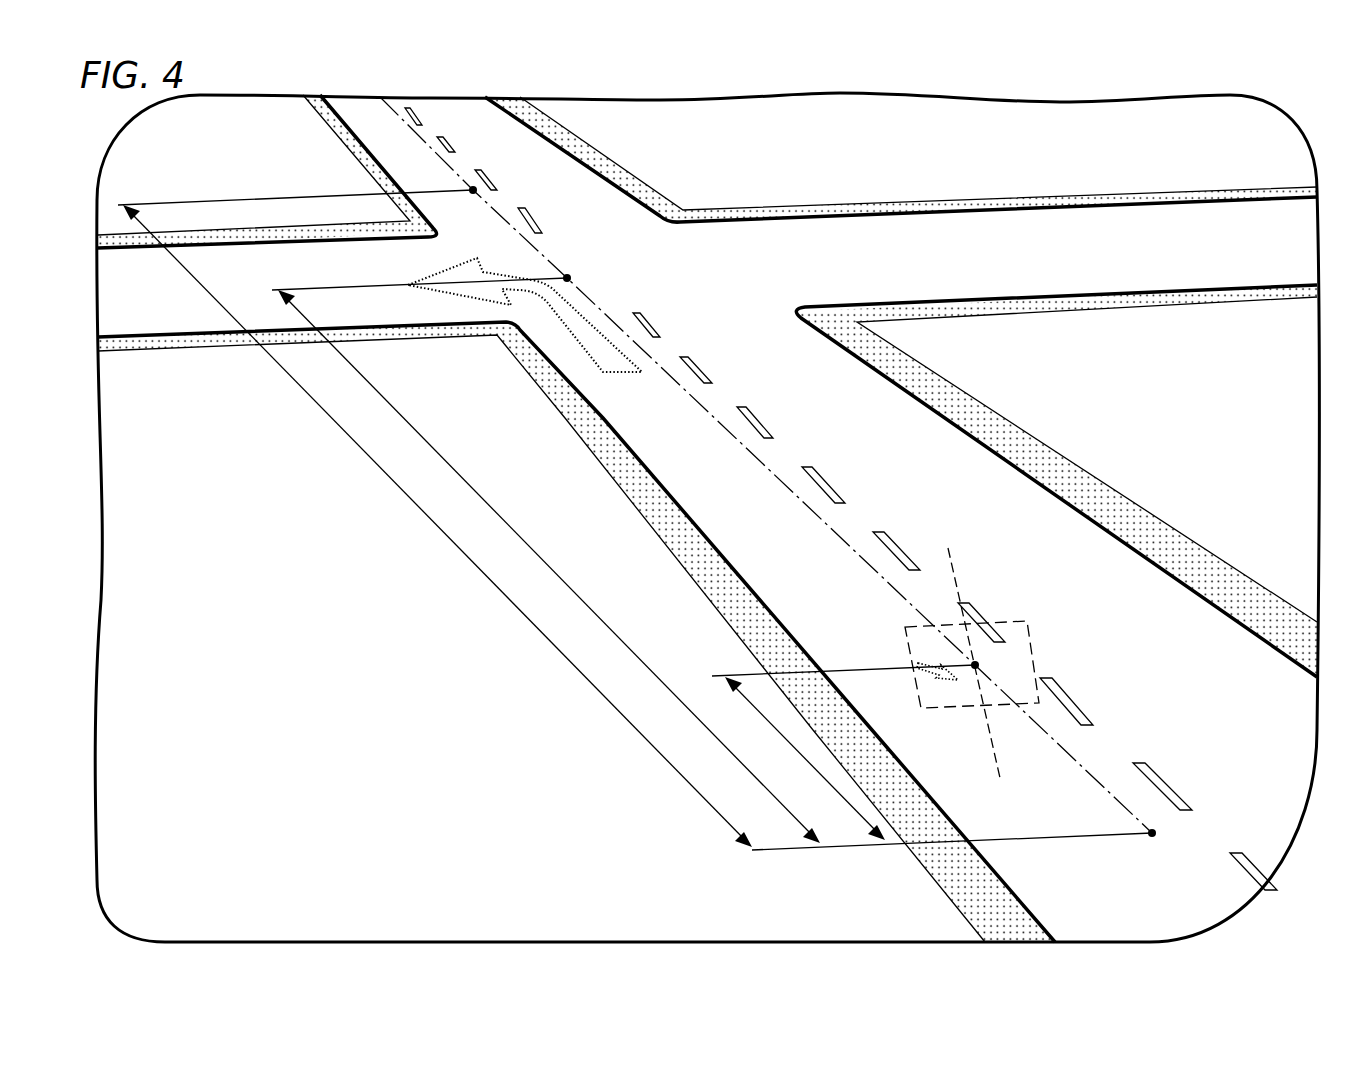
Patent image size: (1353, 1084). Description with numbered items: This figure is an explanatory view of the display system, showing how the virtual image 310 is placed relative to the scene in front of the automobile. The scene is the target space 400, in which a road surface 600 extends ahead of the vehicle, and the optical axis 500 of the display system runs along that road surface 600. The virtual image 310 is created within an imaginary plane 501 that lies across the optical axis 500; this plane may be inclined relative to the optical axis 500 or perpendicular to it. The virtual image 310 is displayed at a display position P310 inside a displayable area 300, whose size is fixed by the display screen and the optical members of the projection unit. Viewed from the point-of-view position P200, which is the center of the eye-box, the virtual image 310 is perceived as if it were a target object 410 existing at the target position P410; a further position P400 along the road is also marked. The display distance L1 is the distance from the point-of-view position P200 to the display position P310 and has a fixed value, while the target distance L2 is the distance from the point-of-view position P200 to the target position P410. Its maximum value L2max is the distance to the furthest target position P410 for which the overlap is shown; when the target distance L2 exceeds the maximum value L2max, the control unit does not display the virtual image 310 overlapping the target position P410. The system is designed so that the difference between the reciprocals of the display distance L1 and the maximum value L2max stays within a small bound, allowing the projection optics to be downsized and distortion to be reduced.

The target space 400 is at (828, 493).
The target object 410 is at (477, 258).
The optical axis 500 is at (767, 472).
The imaginary plane 501 is at (956, 572).
The displayable area 300 is at (1027, 621).
The virtual image 310 is at (928, 681).
The road surface 600 is at (967, 462).
The position P400 is at (473, 190).
The target position P410 is at (567, 278).
The display position P310 is at (975, 665).
The point-of-view position P200 is at (1152, 833).
The display distance L1 is at (843, 752).
The target distance L2 is at (546, 560).
The maximum value of the target distance L2max is at (635, 520).